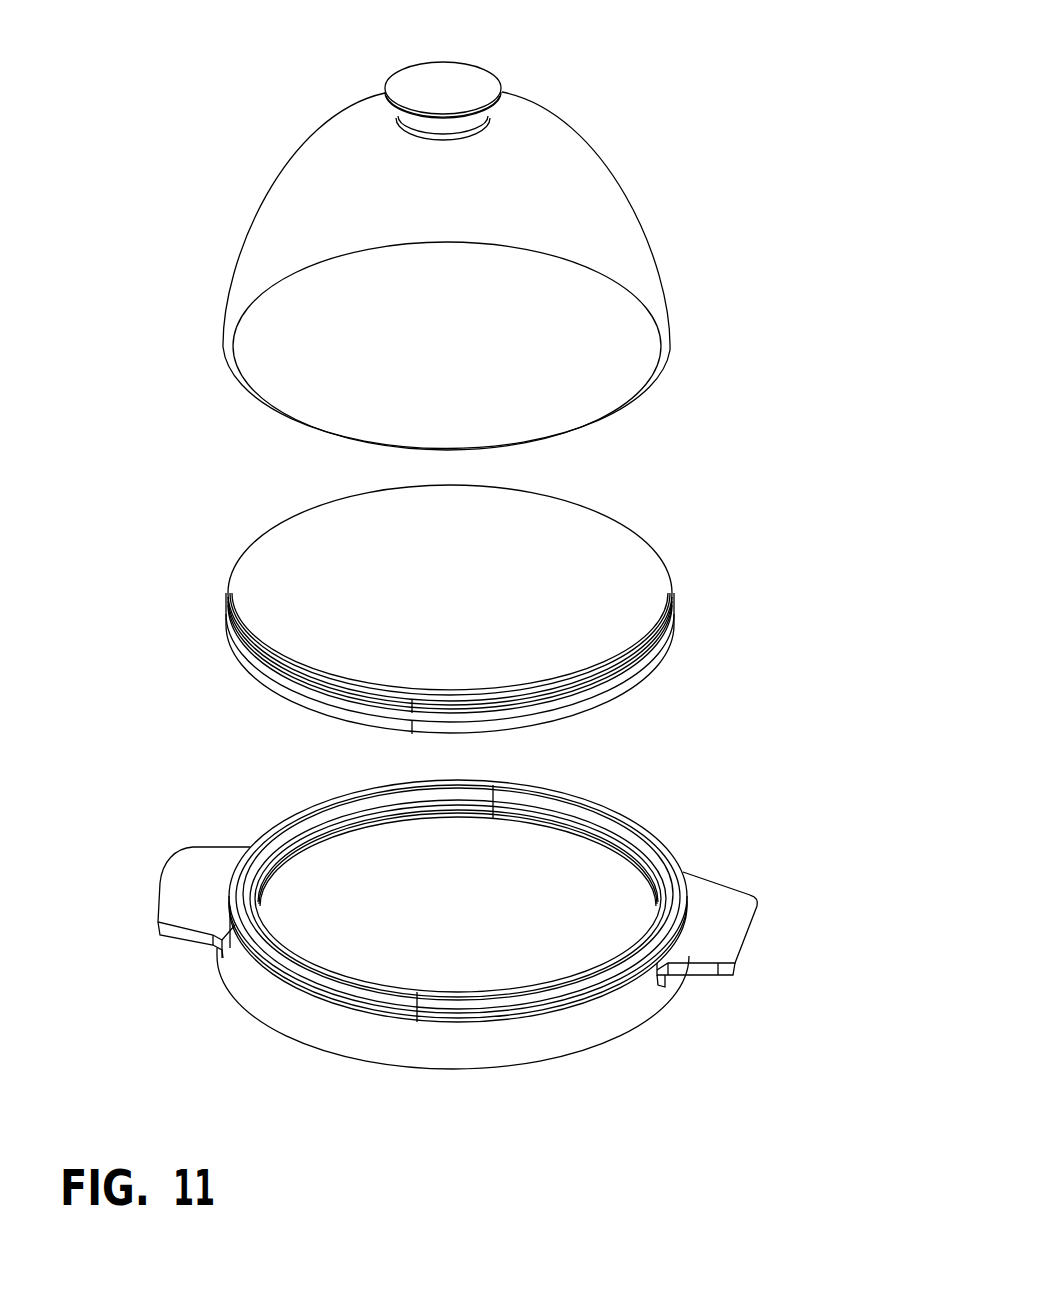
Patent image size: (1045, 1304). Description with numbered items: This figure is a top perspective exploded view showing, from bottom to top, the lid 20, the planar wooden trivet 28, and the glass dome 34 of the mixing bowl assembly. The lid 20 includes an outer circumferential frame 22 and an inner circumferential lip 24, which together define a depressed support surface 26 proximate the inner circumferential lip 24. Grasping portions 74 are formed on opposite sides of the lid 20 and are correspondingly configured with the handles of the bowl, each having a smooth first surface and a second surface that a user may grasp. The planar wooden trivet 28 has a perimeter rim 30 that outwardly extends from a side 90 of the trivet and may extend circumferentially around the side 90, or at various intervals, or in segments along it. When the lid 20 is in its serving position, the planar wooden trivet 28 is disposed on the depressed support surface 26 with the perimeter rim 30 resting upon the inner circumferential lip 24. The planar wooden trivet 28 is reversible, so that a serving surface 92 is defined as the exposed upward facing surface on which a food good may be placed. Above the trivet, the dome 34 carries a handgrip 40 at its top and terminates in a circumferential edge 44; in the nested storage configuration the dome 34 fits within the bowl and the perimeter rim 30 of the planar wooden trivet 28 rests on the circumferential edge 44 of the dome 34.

The lid 20 is at (425, 944).
The outer circumferential frame 22 is at (453, 1052).
The inner circumferential lip 24 is at (555, 992).
The depressed support surface 26 is at (573, 877).
The planar wooden trivet 28 is at (473, 609).
The perimeter rim 30 is at (623, 677).
The dome 34 is at (638, 208).
The handgrip 40 is at (413, 85).
The circumferential edge 44 is at (252, 400).
The grasping portions 74 is at (160, 928).
The side 90 is at (657, 632).
The serving surface 92 is at (287, 567).